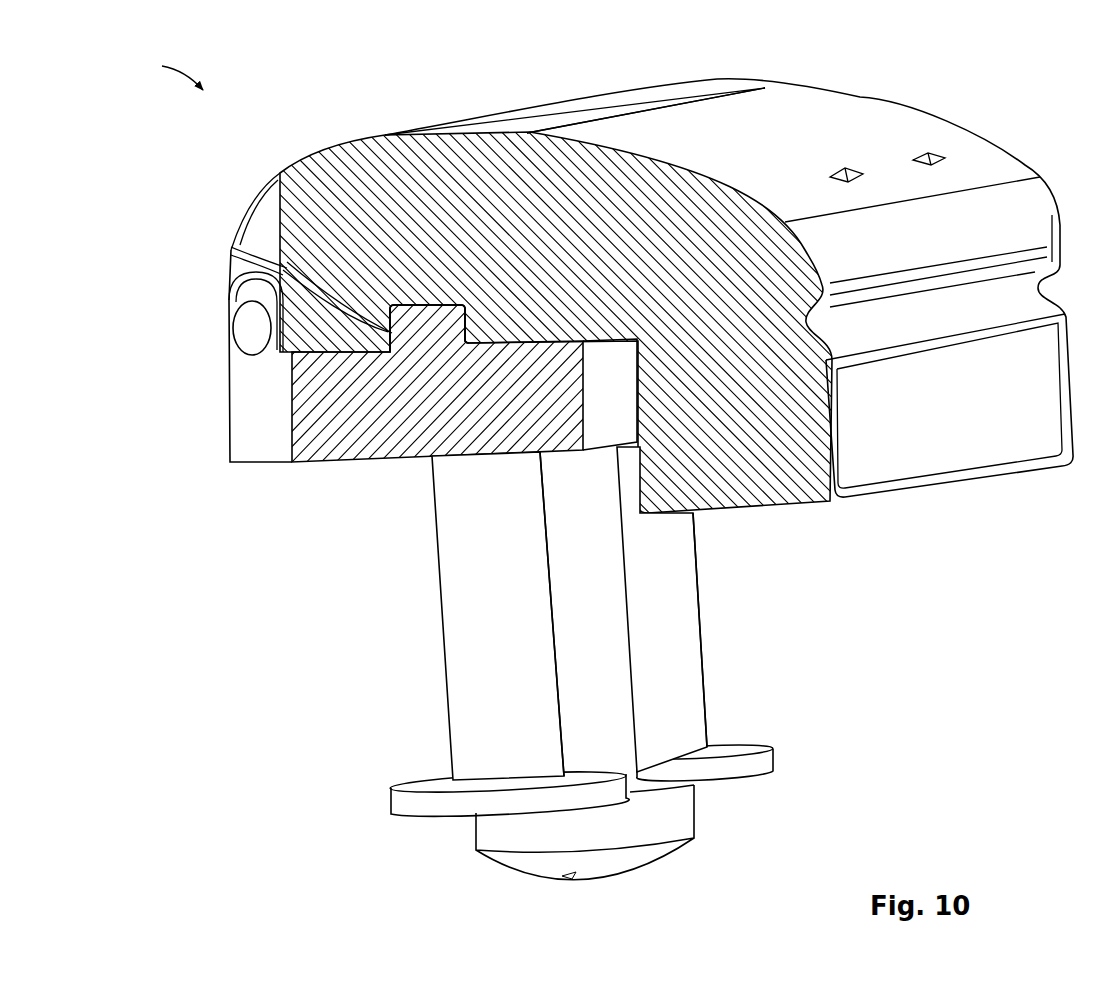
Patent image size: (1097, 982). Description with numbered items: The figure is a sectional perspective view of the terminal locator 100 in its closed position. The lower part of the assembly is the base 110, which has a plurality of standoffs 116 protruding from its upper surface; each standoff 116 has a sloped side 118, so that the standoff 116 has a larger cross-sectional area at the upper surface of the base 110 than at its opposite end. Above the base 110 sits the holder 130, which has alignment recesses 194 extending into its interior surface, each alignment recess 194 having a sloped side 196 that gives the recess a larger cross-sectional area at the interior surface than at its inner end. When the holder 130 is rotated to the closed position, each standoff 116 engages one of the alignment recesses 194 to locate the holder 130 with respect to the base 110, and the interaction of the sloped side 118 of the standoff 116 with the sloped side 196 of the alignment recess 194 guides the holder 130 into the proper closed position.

The terminal locator 100 is at (203, 40).
The base 110 is at (224, 403).
The standoffs 116 is at (425, 335).
The sloped side 118 is at (468, 303).
The holder 130 is at (852, 88).
The alignment recesses 194 is at (417, 302).
The sloped side 196 is at (273, 248).